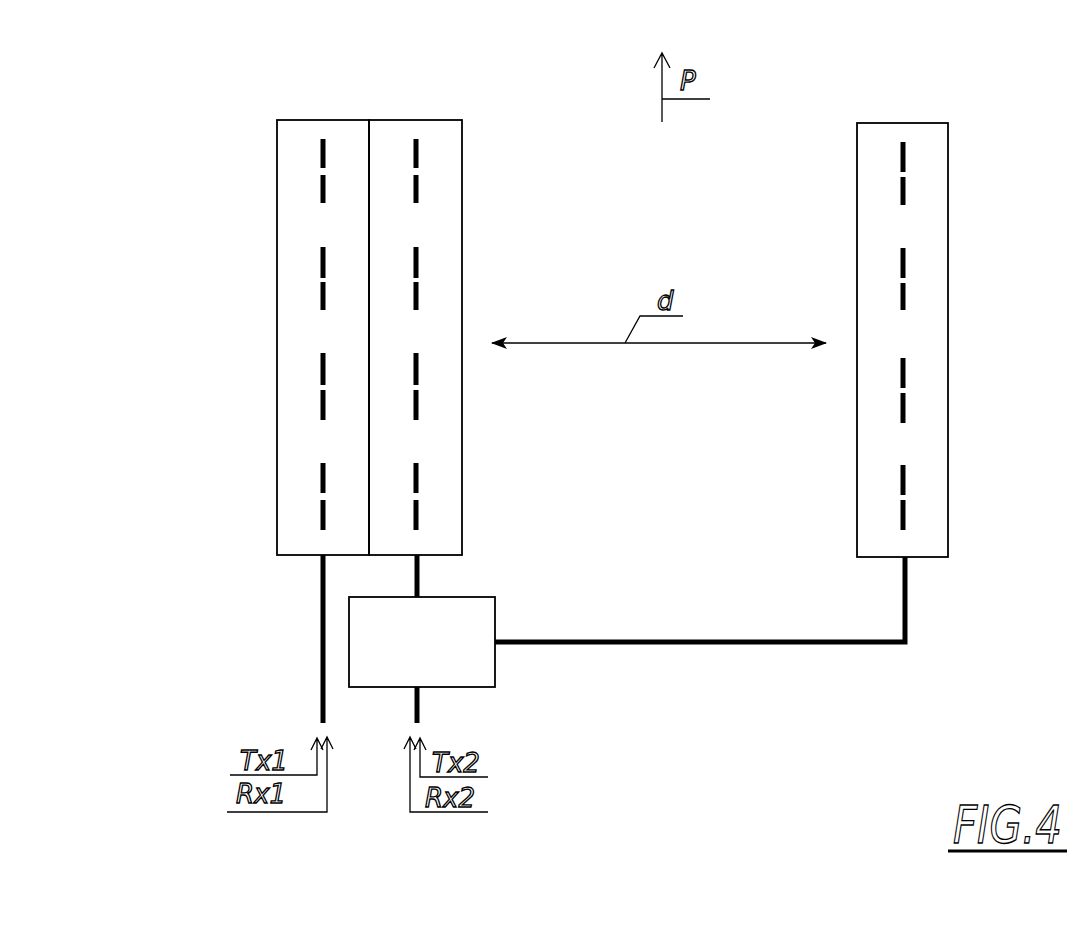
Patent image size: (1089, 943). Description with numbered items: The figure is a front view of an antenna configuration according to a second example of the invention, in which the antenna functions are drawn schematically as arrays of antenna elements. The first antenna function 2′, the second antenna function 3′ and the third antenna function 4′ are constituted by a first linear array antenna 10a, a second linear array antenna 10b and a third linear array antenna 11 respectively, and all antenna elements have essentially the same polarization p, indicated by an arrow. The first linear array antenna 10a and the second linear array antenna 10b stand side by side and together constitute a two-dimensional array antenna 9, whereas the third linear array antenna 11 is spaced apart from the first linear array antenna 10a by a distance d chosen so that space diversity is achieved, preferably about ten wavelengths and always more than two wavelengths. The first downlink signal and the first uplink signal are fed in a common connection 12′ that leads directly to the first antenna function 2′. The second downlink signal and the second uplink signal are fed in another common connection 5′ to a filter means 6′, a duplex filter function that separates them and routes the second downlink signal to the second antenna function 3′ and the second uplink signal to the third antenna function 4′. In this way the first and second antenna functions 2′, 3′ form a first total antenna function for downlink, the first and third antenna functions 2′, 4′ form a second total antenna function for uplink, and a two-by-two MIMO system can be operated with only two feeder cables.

The two-dimensional array antenna 9 is at (372, 330).
The first linear array antenna 10a is at (302, 563).
The second linear array antenna 10b is at (438, 562).
The first antenna function 2′ is at (313, 188).
The second antenna function 3′ is at (427, 188).
The third linear array antenna 11 is at (900, 112).
The third antenna function 4′ is at (913, 268).
The filter means 6′ is at (440, 656).
The common connection 12′ is at (322, 648).
The common connection 5′ is at (418, 705).